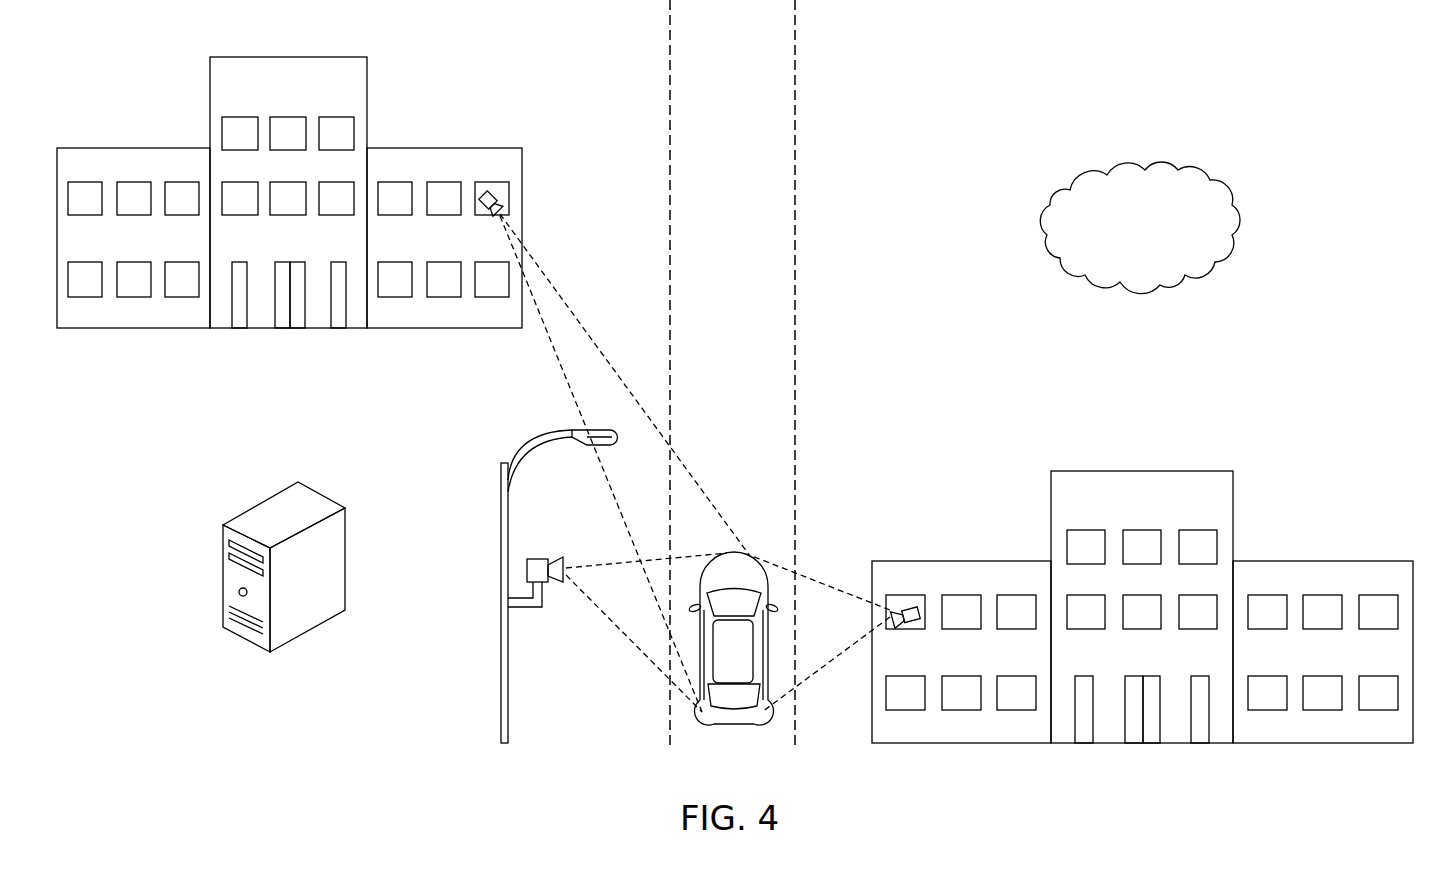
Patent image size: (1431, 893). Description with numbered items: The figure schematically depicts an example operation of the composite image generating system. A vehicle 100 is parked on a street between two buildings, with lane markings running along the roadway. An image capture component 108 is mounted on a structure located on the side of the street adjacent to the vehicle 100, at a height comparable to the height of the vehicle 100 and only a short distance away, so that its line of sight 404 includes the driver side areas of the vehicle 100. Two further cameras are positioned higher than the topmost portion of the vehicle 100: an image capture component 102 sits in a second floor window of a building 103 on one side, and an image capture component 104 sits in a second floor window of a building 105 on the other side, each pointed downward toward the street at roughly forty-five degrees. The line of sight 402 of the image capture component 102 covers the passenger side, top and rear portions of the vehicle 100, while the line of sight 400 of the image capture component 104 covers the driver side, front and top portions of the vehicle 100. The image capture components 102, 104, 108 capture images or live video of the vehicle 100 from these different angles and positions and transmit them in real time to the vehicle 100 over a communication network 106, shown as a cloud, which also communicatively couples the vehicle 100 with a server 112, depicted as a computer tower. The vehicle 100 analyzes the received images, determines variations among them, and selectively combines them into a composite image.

The vehicle 100 is at (735, 727).
The image capture component 102 is at (910, 606).
The building 103 is at (1310, 561).
The image capture component 104 is at (490, 192).
The building 105 is at (445, 148).
The communication network 106 is at (1165, 162).
The image capture component 108 is at (567, 583).
The server 112 is at (262, 503).
The line of sight 400 is at (597, 360).
The line of sight 402 is at (818, 592).
The line of sight 404 is at (635, 630).